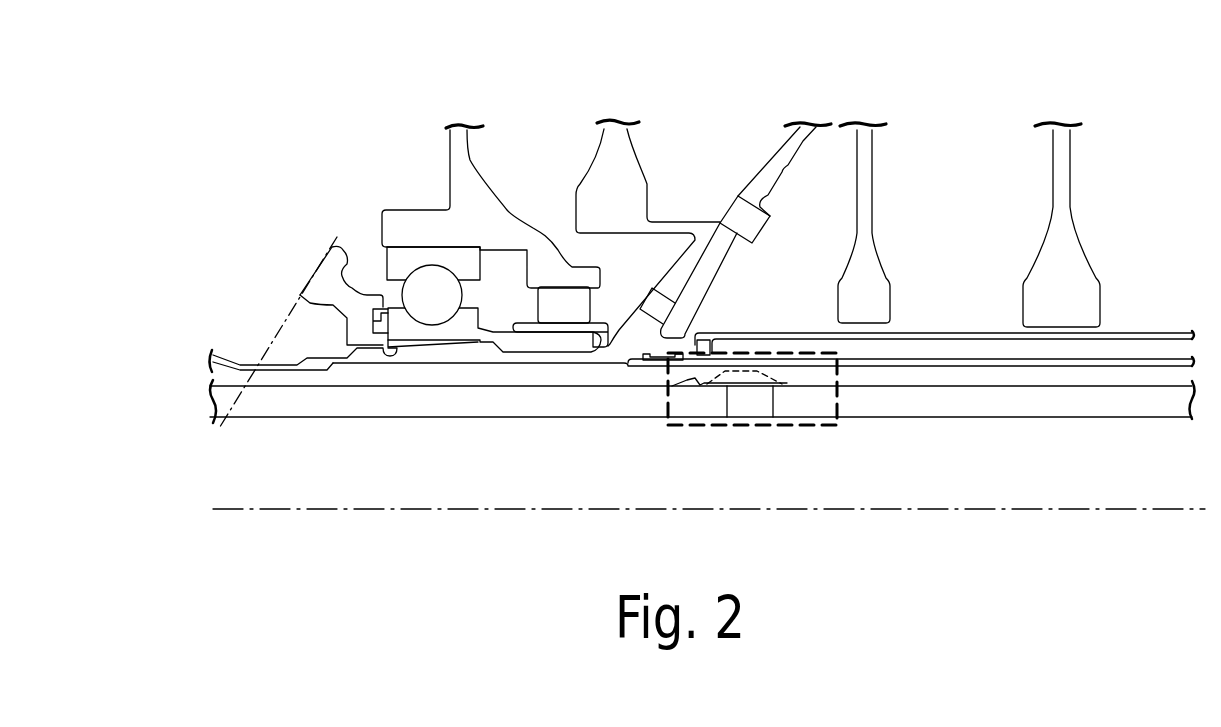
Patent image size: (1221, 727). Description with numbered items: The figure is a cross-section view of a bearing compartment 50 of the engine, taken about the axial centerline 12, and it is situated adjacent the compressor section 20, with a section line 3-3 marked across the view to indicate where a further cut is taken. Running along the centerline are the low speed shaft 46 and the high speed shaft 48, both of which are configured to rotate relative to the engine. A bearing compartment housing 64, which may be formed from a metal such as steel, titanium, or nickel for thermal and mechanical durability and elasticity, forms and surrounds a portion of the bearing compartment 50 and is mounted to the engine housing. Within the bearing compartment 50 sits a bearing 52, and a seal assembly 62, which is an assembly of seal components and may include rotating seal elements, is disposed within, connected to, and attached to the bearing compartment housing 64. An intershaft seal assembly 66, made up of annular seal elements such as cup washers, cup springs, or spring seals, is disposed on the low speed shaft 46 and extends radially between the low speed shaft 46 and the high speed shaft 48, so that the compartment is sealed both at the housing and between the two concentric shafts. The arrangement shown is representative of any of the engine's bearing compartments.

The axial centerline 12 is at (447, 509).
The compressor section 20 is at (720, 102).
The low speed shaft 46 is at (567, 418).
The high speed shaft 48 is at (933, 358).
The bearing compartment 50 is at (249, 221).
The bearing 52 is at (408, 337).
The seal assembly 62 is at (378, 150).
The bearing compartment housing 64 is at (506, 211).
The intershaft seal assembly 66 is at (794, 373).
The section line 3-3 is at (690, 428).